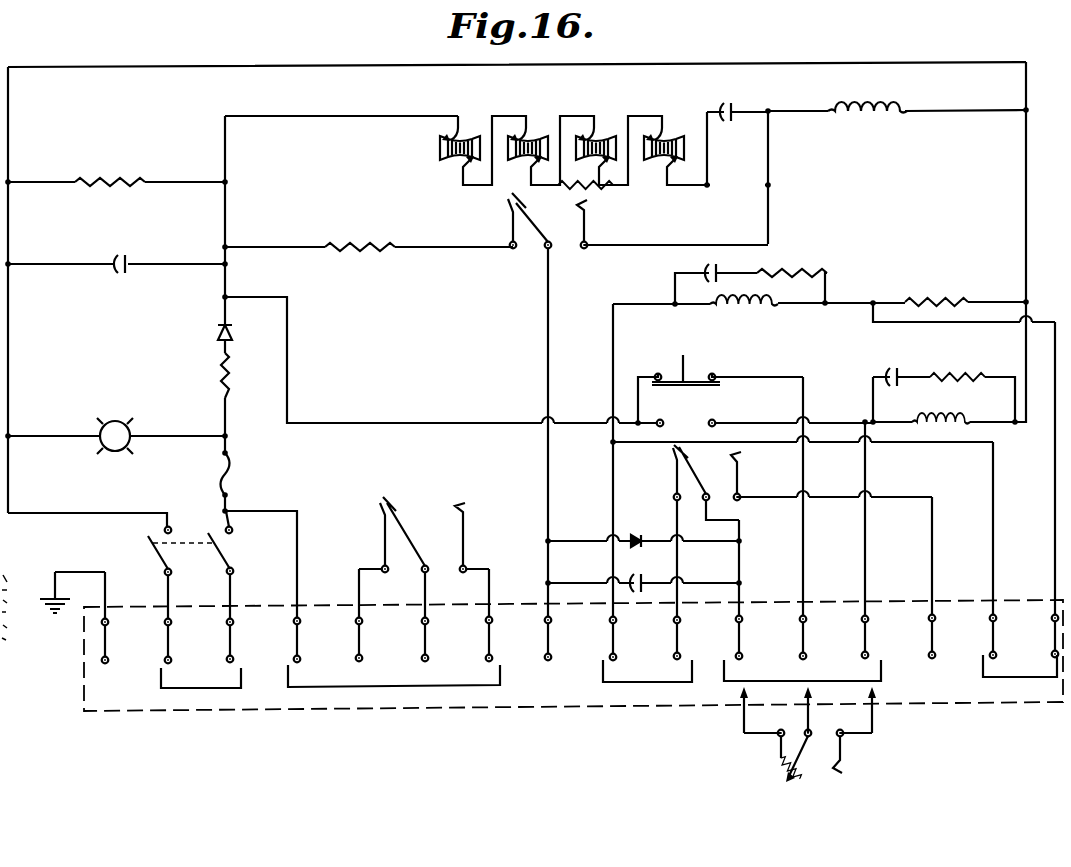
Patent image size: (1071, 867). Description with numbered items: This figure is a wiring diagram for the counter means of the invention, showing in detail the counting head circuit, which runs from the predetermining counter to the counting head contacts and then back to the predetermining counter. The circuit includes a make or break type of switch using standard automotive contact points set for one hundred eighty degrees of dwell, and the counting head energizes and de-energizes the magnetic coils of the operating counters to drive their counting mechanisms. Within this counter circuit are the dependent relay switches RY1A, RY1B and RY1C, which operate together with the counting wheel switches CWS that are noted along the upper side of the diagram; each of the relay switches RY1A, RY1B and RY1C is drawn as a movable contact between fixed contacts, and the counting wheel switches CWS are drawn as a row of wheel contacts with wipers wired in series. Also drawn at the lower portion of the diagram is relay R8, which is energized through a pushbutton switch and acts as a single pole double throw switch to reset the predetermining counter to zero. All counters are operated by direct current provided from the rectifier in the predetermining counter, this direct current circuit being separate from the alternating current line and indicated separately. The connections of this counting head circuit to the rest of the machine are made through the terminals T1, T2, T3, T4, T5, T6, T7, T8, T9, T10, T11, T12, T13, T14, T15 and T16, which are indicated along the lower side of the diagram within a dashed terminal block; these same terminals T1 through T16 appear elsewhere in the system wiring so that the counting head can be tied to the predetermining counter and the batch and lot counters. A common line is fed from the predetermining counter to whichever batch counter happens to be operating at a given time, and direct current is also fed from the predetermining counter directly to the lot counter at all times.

The terminal T1 is at (559, 454).
The terminal T2 is at (623, 482).
The terminal T3 is at (687, 579).
The terminal T4 is at (749, 589).
The terminal T5 is at (813, 518).
The terminal T6 is at (876, 538).
The terminal T7 is at (942, 577).
The terminal T8 is at (115, 617).
The terminal T9 is at (178, 616).
The terminal T10 is at (244, 615).
The terminal T11 is at (277, 586).
The terminal T12 is at (373, 615).
The terminal T13 is at (439, 616).
The terminal T14 is at (503, 615).
The terminal T15 is at (1007, 550).
The terminal T16 is at (1045, 489).
The dependent relay switch RY1A is at (524, 208).
The dependent relay switch RY1B is at (683, 455).
The dependent relay switch RY1C is at (392, 500).
The relay R8 is at (808, 740).
The counting wheel switches CWS is at (715, 99).